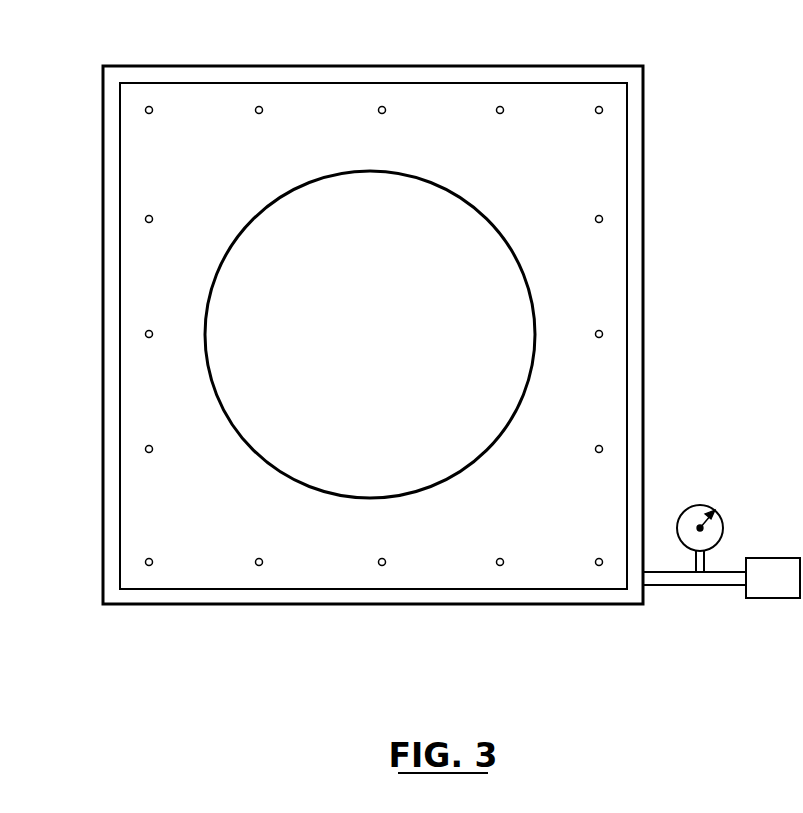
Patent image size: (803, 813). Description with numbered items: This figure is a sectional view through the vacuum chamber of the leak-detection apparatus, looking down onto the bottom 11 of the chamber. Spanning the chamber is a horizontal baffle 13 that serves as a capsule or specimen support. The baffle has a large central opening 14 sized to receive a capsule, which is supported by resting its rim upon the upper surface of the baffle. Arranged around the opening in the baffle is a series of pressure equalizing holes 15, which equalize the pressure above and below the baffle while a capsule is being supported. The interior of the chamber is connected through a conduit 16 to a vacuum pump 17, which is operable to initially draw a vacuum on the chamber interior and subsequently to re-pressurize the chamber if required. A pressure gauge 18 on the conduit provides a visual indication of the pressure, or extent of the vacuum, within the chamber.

The bottom 11 is at (487, 604).
The horizontal baffle 13 is at (455, 140).
The opening 14 is at (247, 227).
The pressure equalizing holes 15 is at (261, 108).
The conduit 16 is at (652, 587).
The vacuum pump 17 is at (786, 589).
The pressure gauge 18 is at (690, 507).